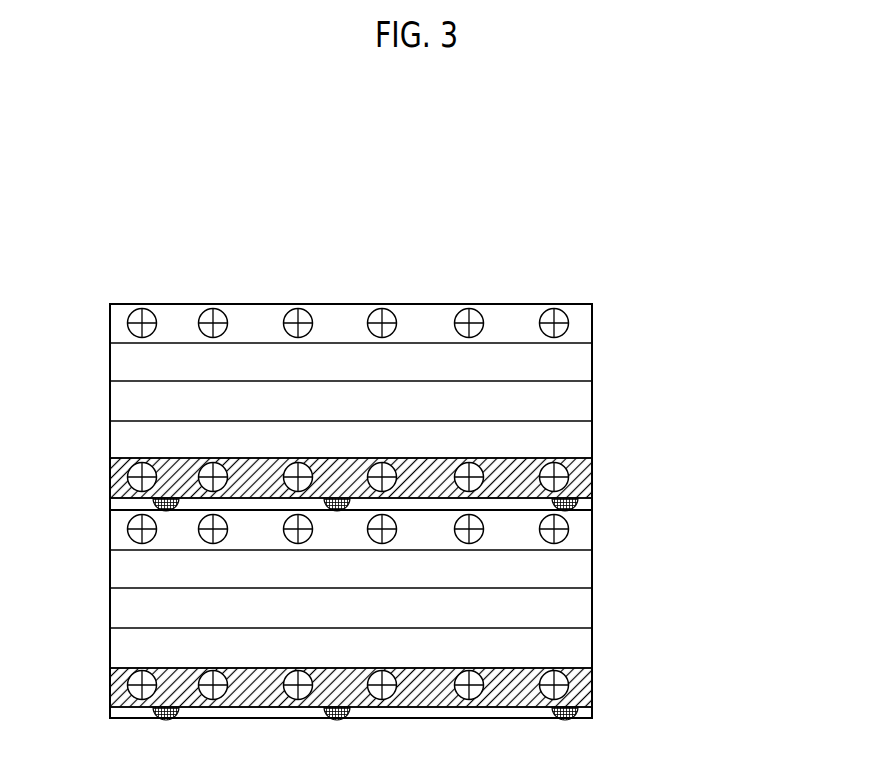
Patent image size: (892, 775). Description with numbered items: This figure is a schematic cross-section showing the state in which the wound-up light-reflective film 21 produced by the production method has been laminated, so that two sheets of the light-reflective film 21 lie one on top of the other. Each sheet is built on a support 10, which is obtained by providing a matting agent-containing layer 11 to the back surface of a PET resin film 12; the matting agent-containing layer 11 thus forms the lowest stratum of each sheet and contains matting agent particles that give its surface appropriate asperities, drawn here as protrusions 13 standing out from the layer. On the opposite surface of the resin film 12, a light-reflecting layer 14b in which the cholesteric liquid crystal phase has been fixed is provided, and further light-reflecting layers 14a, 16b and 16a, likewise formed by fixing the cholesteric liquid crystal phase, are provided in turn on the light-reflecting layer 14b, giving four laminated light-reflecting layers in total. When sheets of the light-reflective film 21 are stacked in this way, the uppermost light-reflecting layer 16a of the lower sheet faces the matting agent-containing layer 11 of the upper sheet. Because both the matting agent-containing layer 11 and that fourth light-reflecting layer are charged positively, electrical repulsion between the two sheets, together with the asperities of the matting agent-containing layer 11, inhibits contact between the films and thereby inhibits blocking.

The support 10 is at (723, 458).
The matting agent-containing layer 11 is at (391, 609).
The resin film 12 is at (392, 581).
The protrusion 13 is at (592, 491).
The light-reflecting layer 14a is at (398, 506).
The light-reflecting layer 14b is at (398, 544).
The light-reflecting layer 16a is at (398, 427).
The light-reflecting layer 16b is at (398, 467).
The light-reflective film 21 is at (790, 302).